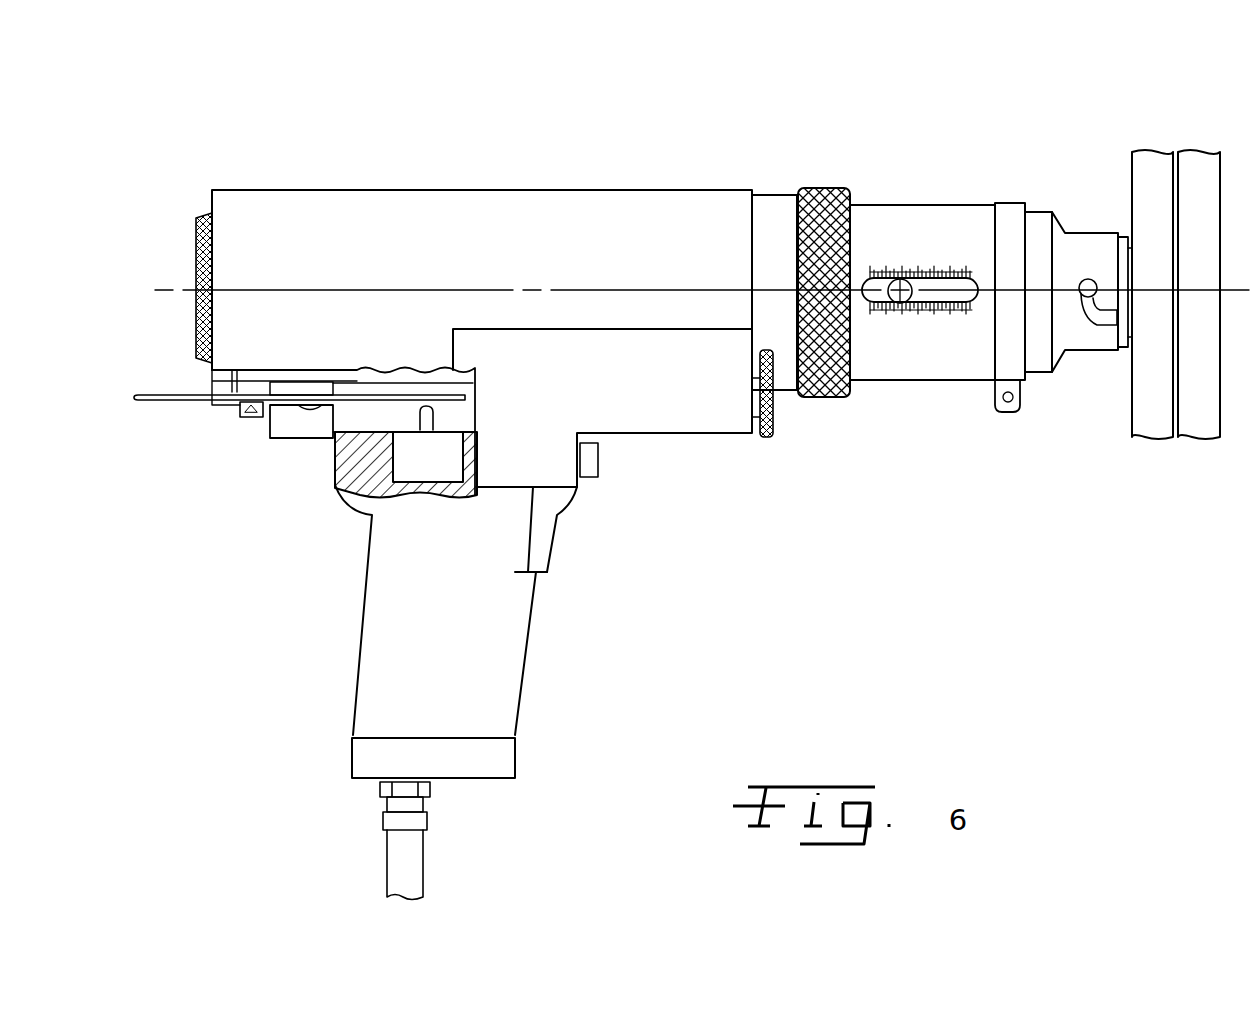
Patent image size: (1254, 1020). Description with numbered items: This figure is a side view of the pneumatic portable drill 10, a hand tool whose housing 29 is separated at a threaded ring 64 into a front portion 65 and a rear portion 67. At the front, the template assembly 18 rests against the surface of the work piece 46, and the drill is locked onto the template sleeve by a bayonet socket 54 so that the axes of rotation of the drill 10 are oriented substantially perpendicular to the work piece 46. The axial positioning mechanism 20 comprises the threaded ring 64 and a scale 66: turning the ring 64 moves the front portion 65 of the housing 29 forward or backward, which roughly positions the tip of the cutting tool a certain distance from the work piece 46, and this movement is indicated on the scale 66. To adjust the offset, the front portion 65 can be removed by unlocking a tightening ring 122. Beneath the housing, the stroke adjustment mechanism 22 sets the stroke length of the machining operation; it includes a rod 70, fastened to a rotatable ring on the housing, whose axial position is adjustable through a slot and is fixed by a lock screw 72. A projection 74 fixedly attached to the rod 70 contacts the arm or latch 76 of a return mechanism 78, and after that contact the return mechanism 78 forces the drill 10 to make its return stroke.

The pneumatic portable drill 10 is at (985, 565).
The template assembly 18 is at (1128, 115).
The axial positioning mechanism 20 is at (875, 132).
The stroke adjustment mechanism 22 is at (215, 555).
The housing 29 is at (615, 110).
The work piece 46 is at (1185, 261).
The bayonet socket 54 is at (1086, 279).
The threaded ring 64 is at (826, 398).
The front portion 65 is at (933, 366).
The scale 66 is at (901, 280).
The rear portion 67 is at (372, 264).
The rod 70 is at (170, 394).
The lock screw 72 is at (252, 420).
The projection 74 is at (323, 409).
The arm or latch 76 is at (437, 409).
The return mechanism 78 is at (443, 468).
The tightening ring 122 is at (997, 357).